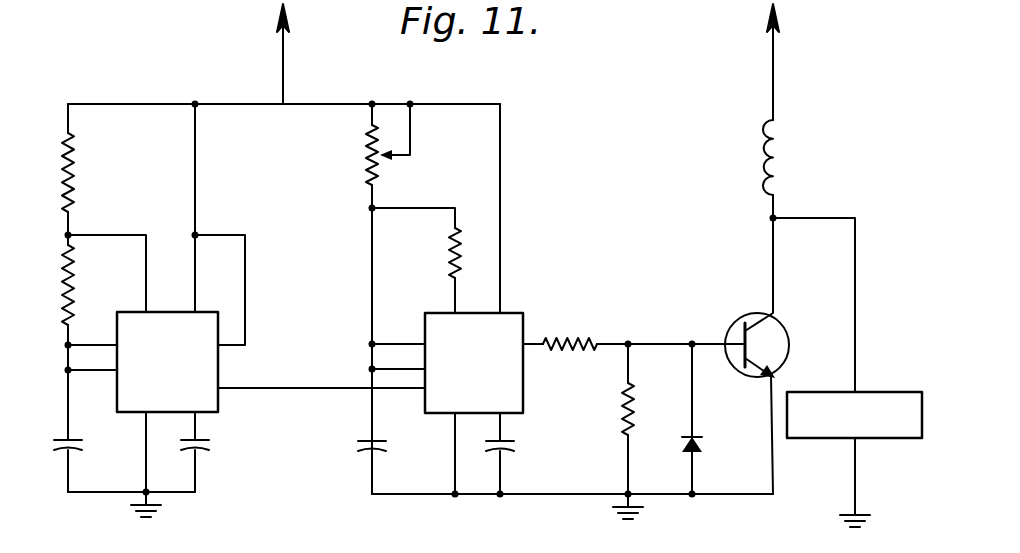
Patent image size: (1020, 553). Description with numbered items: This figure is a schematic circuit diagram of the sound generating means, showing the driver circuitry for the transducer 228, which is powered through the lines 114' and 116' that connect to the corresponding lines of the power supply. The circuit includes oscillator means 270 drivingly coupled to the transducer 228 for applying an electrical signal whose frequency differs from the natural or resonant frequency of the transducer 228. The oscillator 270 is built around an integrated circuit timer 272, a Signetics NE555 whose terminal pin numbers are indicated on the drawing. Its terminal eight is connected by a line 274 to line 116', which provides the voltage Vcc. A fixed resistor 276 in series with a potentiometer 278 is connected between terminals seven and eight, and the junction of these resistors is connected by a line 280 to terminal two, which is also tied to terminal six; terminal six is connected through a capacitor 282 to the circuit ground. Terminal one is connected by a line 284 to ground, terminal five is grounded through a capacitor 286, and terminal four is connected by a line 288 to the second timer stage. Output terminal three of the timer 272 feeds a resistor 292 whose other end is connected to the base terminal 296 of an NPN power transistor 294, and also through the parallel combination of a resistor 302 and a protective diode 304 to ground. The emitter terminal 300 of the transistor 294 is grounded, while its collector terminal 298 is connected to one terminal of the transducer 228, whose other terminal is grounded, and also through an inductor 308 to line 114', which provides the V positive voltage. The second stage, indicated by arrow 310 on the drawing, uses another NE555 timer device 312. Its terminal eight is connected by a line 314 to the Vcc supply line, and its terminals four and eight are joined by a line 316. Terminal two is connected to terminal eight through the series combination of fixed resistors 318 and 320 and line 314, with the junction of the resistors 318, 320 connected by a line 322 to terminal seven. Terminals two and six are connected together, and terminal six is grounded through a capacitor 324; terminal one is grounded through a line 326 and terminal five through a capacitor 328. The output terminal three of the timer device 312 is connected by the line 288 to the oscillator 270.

The line 114' is at (733, 62).
The line 116' is at (284, 54).
The transducer 228 is at (908, 392).
The oscillator means 270 is at (528, 302).
The integrated circuit timer 272 is at (524, 385).
The line 274 is at (501, 150).
The fixed resistor 276 is at (449, 250).
The variable resistor or potentiometer 278 is at (366, 148).
The line 280 is at (371, 290).
The capacitor 282 is at (371, 446).
The line 284 is at (381, 448).
The capacitor 286 is at (511, 448).
The line 288 is at (292, 389).
The resistor 292 is at (572, 338).
The power transistor 294 is at (745, 326).
The base terminal 296 is at (692, 341).
The collector terminal 298 is at (774, 313).
The emitter terminal 300 is at (772, 379).
The resistor 302 is at (624, 410).
The protective diode 304 is at (703, 446).
The inductor 308 is at (783, 150).
The first timer circuit 310 is at (262, 330).
The integrated circuit timer device 312 is at (219, 372).
The line 314 is at (196, 160).
The line 316 is at (246, 276).
The fixed resistor 318 is at (73, 284).
The fixed resistor 320 is at (73, 170).
The line 322 is at (121, 235).
The capacitor 324 is at (74, 448).
The line 326 is at (141, 441).
The capacitor 328 is at (201, 448).